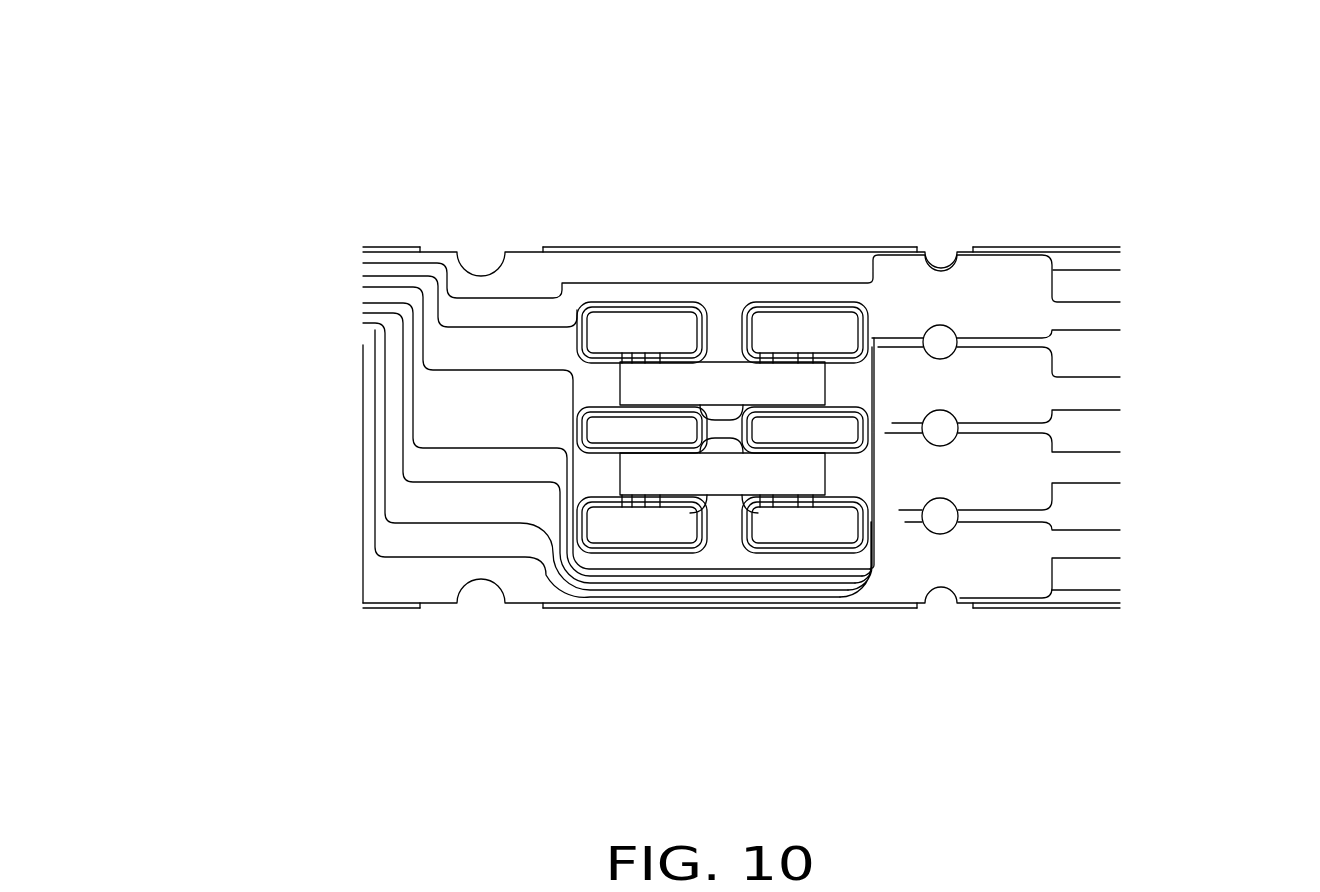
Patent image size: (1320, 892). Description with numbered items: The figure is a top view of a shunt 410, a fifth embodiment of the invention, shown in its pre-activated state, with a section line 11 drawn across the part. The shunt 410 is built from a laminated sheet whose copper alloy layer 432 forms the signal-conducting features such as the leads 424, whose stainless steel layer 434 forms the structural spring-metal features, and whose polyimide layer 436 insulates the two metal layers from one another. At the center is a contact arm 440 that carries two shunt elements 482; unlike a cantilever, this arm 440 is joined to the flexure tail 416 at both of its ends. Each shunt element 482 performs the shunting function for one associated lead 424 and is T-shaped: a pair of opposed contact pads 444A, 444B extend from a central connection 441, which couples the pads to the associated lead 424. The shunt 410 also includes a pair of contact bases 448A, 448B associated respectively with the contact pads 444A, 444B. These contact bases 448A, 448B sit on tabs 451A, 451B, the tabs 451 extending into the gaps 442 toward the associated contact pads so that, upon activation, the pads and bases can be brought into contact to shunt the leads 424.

The shunt 410 is at (766, 216).
The flexure tail 416 is at (1097, 226).
The lead 424 is at (820, 293).
The copper alloy layer 432 is at (667, 377).
The stainless steel layer 434 is at (637, 323).
The polyimide layer 436 is at (712, 263).
The contact arm 440 is at (720, 435).
The central connection 441 is at (733, 297).
The gap 442 is at (838, 333).
The contact pad 444A is at (632, 385).
The contact pad 444B is at (807, 395).
The contact base 448A is at (615, 380).
The contact base 448B is at (828, 360).
The lead 451 is at (588, 473).
The tab 451A is at (592, 386).
The tab 451B is at (850, 392).
The shunt element 482 is at (722, 378).
The section line 11- 11 is at (1073, 468).